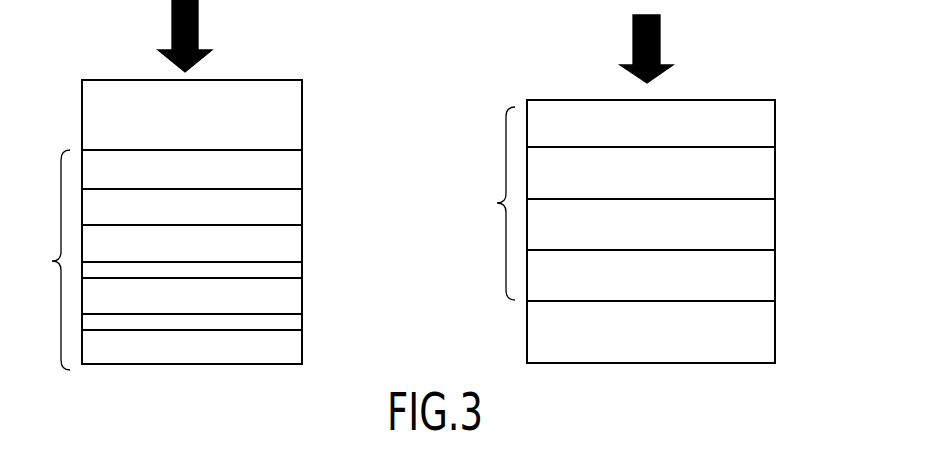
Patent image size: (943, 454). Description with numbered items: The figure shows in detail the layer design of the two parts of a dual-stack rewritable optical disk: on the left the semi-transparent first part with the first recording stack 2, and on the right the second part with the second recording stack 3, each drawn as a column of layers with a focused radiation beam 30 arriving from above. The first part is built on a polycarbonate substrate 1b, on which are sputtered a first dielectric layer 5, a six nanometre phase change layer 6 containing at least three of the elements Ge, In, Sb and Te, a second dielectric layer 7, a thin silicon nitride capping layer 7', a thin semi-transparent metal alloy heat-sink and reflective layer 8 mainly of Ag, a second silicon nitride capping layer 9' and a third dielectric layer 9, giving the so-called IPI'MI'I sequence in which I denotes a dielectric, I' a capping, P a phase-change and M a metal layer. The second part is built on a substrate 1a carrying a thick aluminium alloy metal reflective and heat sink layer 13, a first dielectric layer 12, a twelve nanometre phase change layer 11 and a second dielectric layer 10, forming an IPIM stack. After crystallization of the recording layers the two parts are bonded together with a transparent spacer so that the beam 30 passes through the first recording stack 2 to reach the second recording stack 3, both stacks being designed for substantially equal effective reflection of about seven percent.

The focused radiation beam 30 is at (193, 40).
The L0 recording stack 2 is at (152, 225).
The substrate 1b is at (267, 113).
The first dielectric layer 5 is at (267, 170).
The phase change layer 6 is at (263, 213).
The second dielectric layer 7 is at (260, 237).
The capping layer 7' is at (261, 261).
The semi transparent metal alloy heat-sink and reflective layer 8 is at (280, 298).
The second silicon nitride capping layer 9' is at (263, 325).
The third dielectric layer 9 is at (263, 350).
The L1 recording stack 3 is at (616, 200).
The second dielectric layer 10 is at (710, 128).
The phase change layer 11 is at (710, 180).
The first dielectric layer 12 is at (713, 228).
The thick metal reflective and heat sink layer 13 is at (718, 278).
The substrate 1a is at (723, 338).